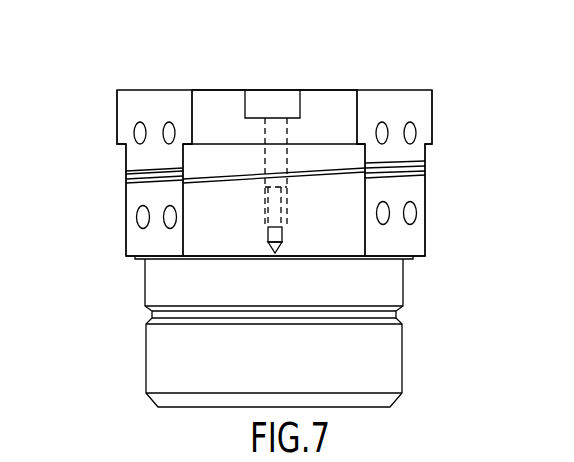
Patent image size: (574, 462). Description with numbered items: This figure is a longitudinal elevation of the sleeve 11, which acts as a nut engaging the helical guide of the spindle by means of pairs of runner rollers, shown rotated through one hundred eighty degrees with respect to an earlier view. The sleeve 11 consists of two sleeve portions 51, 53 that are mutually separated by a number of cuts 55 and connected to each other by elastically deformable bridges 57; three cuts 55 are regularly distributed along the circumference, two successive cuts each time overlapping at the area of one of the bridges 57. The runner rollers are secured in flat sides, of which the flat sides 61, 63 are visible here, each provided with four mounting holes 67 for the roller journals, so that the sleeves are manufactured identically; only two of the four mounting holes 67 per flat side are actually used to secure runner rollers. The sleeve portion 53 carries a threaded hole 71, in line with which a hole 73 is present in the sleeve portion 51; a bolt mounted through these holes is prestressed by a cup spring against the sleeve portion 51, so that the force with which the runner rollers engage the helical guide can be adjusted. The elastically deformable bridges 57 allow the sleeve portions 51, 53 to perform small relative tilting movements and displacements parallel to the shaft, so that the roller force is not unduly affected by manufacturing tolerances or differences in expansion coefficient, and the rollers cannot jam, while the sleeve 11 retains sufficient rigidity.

The sleeve 11 is at (105, 238).
The sleeve portion 51 is at (331, 110).
The sleeve portion 53 is at (385, 368).
The cuts 55 is at (168, 170).
The elastically deformable bridges 57 is at (130, 180).
The flat side 61 is at (417, 192).
The flat side 63 is at (148, 110).
The mounting holes 67 is at (170, 124).
The threaded hole 71 is at (275, 210).
The hole 73 is at (265, 130).